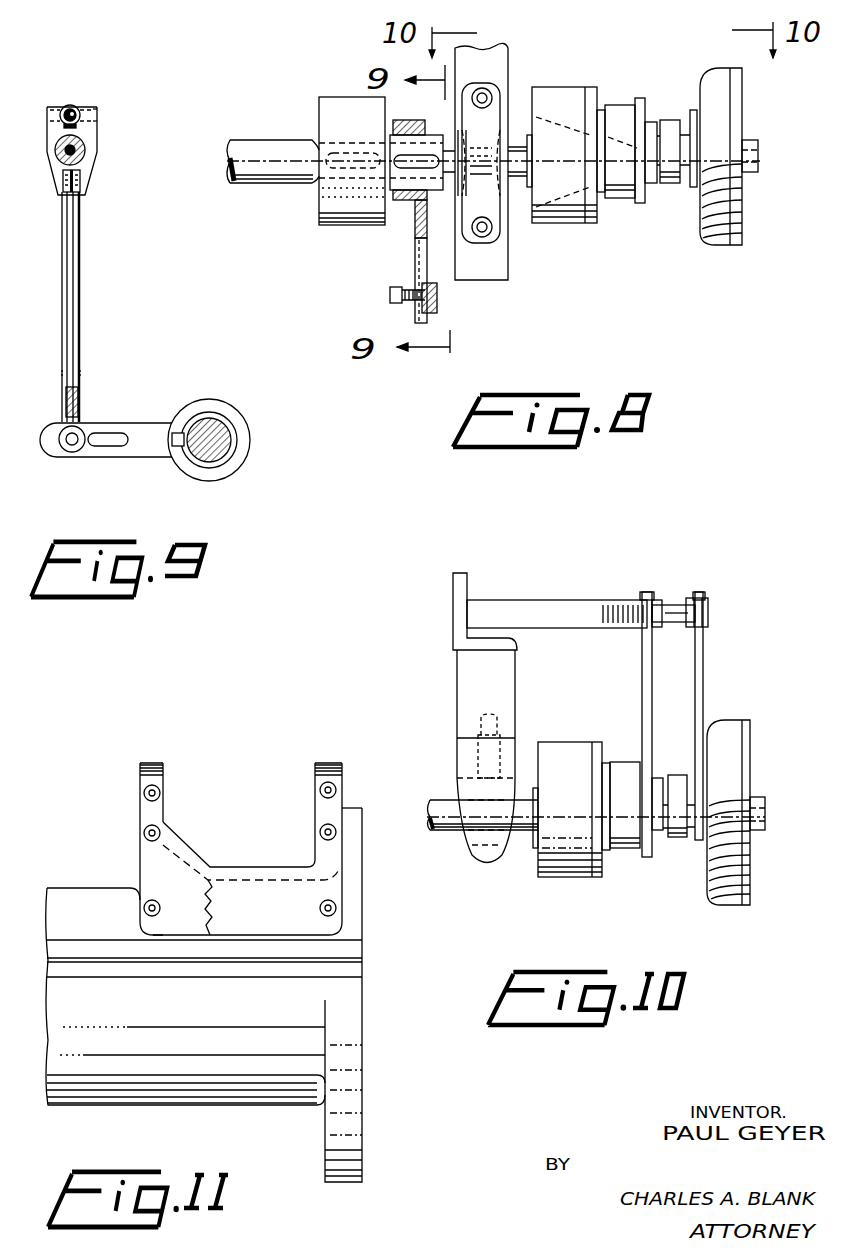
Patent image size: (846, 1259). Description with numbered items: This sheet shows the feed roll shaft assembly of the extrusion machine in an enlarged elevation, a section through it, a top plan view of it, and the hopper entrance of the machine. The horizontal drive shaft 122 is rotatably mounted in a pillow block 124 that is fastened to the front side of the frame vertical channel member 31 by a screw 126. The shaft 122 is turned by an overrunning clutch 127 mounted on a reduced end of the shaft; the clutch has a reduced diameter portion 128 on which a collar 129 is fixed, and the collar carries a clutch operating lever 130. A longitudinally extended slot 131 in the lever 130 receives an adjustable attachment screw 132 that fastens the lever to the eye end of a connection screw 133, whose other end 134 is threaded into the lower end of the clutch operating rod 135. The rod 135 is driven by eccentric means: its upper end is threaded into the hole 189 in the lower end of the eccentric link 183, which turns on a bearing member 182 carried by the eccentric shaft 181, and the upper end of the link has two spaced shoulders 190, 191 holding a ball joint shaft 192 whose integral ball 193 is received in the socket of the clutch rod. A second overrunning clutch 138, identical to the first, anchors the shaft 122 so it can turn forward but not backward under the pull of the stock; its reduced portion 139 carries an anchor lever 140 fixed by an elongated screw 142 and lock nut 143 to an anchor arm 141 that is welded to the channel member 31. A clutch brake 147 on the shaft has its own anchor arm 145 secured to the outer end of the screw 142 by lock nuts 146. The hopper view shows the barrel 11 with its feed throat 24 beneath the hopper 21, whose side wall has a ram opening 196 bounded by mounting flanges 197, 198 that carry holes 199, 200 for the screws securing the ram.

In FIG. 11, the barrel 11 is at (87, 903).
In FIG. 11, the hopper 21 is at (130, 778).
In FIG. 11, the feed throat 24 is at (265, 928).
In FIG. 8, the frame vertical channel member 31 is at (493, 68).
In FIG. 10, the frame vertical channel member 31 is at (457, 612).
In FIG. 9, the drive shaft 122 is at (217, 428).
In FIG. 8, the drive shaft 122 is at (260, 143).
In FIG. 10, the drive shaft 122 is at (455, 818).
In FIG. 8, the pillow block 124 is at (507, 245).
In FIG. 10, the pillow block 124 is at (472, 798).
In FIG. 8, the screw 126 is at (490, 98).
In FIG. 10, the screw 126 is at (497, 767).
In FIG. 8, the overrunning clutch 127 is at (319, 226).
In FIG. 9, the reduced diameter portion 128 is at (208, 467).
In FIG. 8, the reduced diameter portion 128 is at (417, 175).
In FIG. 9, the collar 129 is at (240, 457).
In FIG. 8, the collar 129 is at (410, 120).
In FIG. 9, the clutch operating lever 130 is at (148, 430).
In FIG. 8, the clutch operating lever 130 is at (417, 245).
In FIG. 9, the longitudinally extended slot 131 is at (115, 437).
In FIG. 8, the longitudinally extended slot 131 is at (420, 242).
In FIG. 9, the attachment screw 132 is at (82, 442).
In FIG. 8, the attachment screw 132 is at (388, 293).
In FIG. 9, the connection screw 133 is at (72, 448).
In FIG. 8, the connection screw 133 is at (437, 286).
In FIG. 9, the other end of connection screw 134 is at (83, 385).
In FIG. 9, the clutch operating rod 135 is at (68, 287).
In FIG. 8, the second overrunning clutch 138 is at (600, 84).
In FIG. 10, the second overrunning clutch 138 is at (576, 880).
In FIG. 8, the reduced portion 139 is at (620, 112).
In FIG. 10, the reduced portion 139 is at (630, 772).
In FIG. 10, the anchor lever 140 is at (642, 643).
In FIG. 8, the anchor arm 141 is at (518, 205).
In FIG. 10, the anchor arm 141 is at (505, 607).
In FIG. 10, the elongated screw 142 is at (673, 605).
In FIG. 10, the lock nut 143 is at (655, 600).
In FIG. 10, the anchor arm of clutch brake 145 is at (700, 652).
In FIG. 10, the lock nuts 146 is at (694, 598).
In FIG. 8, the clutch brake 147 is at (703, 250).
In FIG. 10, the clutch brake 147 is at (752, 760).
In FIG. 9, the eccentric shaft 181 is at (55, 165).
In FIG. 9, the bearing member 182 is at (78, 149).
In FIG. 9, the eccentric link 183 is at (85, 172).
In FIG. 9, the threaded hole 189 is at (57, 197).
In FIG. 9, the shoulder 190 is at (52, 107).
In FIG. 9, the shoulder 191 is at (92, 104).
In FIG. 9, the ball joint shaft 192 is at (97, 111).
In FIG. 9, the ball 193 is at (72, 105).
In FIG. 11, the ram opening 196 is at (315, 782).
In FIG. 11, the mounting flange 197 is at (140, 812).
In FIG. 11, the mounting flange 198 is at (332, 802).
In FIG. 11, the holes 199 is at (160, 793).
In FIG. 11, the holes 200 is at (320, 831).